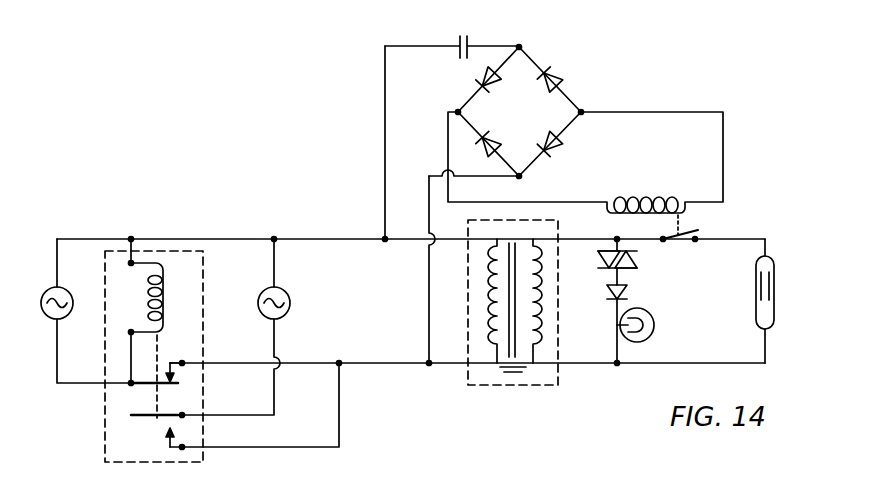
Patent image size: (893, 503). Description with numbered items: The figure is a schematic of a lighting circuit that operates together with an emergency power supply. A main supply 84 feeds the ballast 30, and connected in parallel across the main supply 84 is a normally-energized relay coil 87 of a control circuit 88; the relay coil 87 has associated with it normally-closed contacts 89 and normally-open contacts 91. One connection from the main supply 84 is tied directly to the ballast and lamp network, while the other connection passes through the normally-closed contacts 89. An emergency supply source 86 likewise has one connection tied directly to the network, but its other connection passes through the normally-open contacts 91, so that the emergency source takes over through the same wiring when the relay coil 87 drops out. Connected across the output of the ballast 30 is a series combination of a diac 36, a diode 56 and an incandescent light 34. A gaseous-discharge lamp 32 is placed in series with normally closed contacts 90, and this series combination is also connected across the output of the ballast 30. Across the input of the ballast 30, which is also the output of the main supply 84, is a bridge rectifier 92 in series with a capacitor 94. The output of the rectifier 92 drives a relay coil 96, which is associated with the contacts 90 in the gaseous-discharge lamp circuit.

The ballast 30 is at (540, 385).
The gaseous-discharge lamp 32 is at (777, 296).
The incandescent light 34 is at (654, 326).
The diac 36 is at (640, 257).
The diode 56 is at (604, 299).
The main supply 84 is at (52, 318).
The emergency supply source 86 is at (291, 296).
The relay coil 87 is at (166, 301).
The control circuit 88 is at (112, 431).
The normally-closed contacts 89 is at (162, 391).
The normally closed contacts 90 is at (703, 230).
The normally-open contacts 91 is at (163, 436).
The bridge rectifier 92 is at (579, 87).
The capacitor 94 is at (470, 45).
The relay coil 96 is at (626, 198).